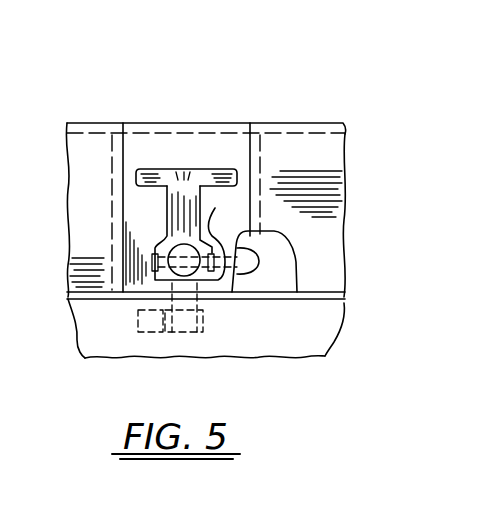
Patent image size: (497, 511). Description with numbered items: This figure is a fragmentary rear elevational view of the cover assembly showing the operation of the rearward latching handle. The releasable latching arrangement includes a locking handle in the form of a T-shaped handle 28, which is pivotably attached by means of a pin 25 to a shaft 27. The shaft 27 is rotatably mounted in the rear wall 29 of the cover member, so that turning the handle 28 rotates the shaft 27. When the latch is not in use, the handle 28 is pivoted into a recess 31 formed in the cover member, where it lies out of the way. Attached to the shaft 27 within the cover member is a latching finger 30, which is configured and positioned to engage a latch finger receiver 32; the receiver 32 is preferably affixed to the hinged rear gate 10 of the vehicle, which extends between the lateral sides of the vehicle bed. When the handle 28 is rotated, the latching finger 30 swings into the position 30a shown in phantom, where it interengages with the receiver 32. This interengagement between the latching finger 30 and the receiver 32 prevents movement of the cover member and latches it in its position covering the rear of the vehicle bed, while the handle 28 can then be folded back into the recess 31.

The rear gate 10 is at (310, 330).
The pin 25 is at (201, 233).
The shaft 27 is at (176, 276).
The T-shaped handle 28 is at (194, 178).
The rear wall 29 is at (287, 150).
The latching finger 30 is at (259, 262).
The latched position of latching finger 30a is at (187, 333).
The recess 31 is at (157, 138).
The latch finger receiver 32 is at (150, 333).